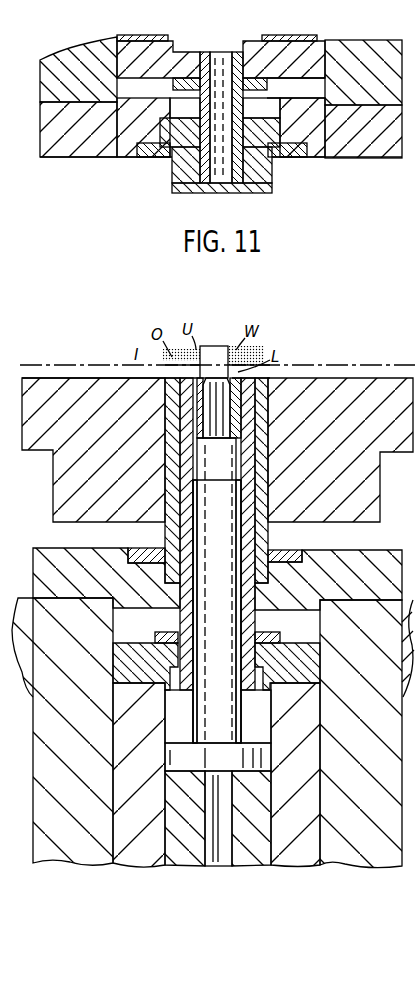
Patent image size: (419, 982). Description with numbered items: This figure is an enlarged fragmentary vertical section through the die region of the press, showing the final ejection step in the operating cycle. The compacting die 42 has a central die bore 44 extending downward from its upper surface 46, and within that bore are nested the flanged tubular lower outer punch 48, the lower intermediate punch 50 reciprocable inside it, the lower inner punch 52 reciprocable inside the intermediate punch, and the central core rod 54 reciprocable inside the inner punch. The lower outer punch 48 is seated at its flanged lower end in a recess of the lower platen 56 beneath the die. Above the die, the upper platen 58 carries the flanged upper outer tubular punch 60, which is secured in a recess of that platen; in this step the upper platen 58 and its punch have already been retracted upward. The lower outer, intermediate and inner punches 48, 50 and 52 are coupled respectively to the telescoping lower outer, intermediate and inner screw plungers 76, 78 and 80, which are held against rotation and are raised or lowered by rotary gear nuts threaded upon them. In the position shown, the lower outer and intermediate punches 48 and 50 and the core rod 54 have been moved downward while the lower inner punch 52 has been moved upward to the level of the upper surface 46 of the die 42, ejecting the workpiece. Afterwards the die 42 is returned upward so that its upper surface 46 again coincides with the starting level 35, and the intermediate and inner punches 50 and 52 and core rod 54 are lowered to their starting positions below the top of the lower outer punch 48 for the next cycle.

The starting level 35 is at (347, 348).
The compacting die 42 is at (46, 386).
The central die bore 44 is at (167, 410).
The upper surface 46 is at (88, 380).
The lower outer punch 48 is at (178, 420).
The lower intermediate punch 50 is at (193, 446).
The lower inner punch 52 is at (205, 466).
The central core rod 54 is at (213, 425).
The lower platen 56 is at (22, 598).
The upper platen 58 is at (58, 145).
The upper outer tubular punch 60 is at (172, 175).
The lower outer screw plunger 76 is at (45, 558).
The lower intermediate screw plunger 78 is at (125, 779).
The lower inner screw plunger 80 is at (178, 840).